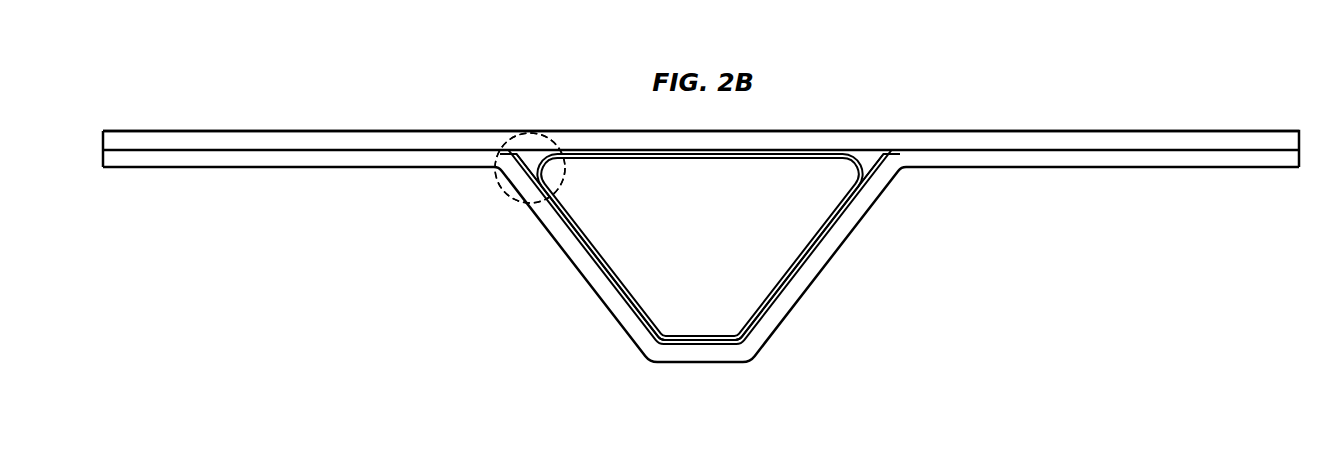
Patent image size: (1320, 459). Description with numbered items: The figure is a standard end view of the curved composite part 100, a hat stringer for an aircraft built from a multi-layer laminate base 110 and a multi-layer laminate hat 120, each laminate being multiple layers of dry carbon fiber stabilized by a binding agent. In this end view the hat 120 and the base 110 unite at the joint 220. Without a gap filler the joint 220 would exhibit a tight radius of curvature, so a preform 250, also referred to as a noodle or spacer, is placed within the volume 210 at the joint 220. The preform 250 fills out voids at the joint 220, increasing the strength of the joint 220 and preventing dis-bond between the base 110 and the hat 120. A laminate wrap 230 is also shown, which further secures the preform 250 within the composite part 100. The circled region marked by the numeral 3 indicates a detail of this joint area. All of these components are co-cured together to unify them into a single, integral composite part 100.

The composite part 100 is at (1095, 85).
The multi-layer laminate base 110 is at (258, 130).
The multi-layer laminate hat 120 is at (273, 168).
The volume 210 is at (577, 147).
The joint 220 is at (580, 174).
The laminate wrap 230 is at (618, 281).
The preform 250 is at (525, 140).
The detail view FIG. 3 indicator 3 is at (505, 193).